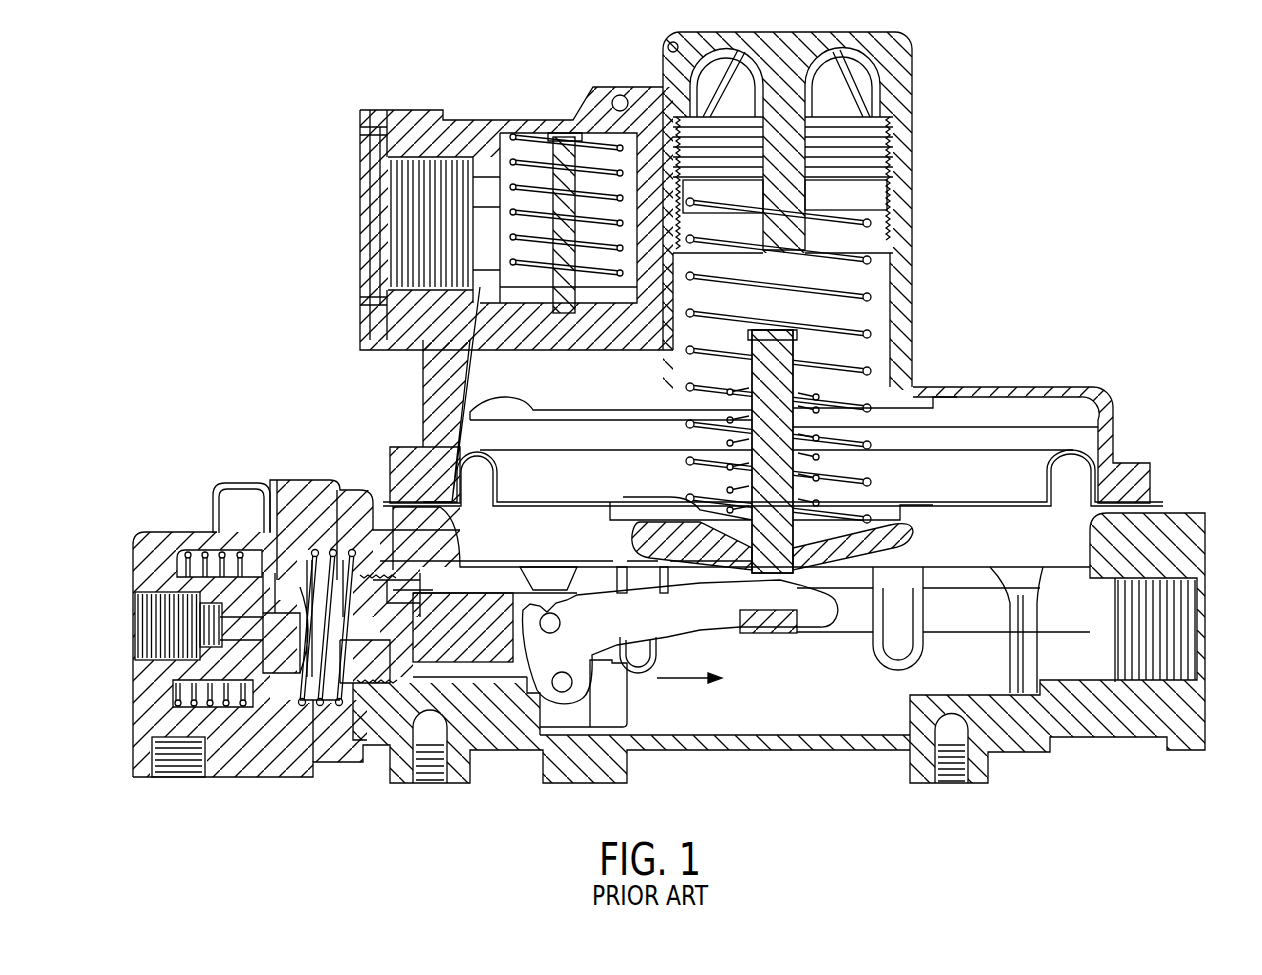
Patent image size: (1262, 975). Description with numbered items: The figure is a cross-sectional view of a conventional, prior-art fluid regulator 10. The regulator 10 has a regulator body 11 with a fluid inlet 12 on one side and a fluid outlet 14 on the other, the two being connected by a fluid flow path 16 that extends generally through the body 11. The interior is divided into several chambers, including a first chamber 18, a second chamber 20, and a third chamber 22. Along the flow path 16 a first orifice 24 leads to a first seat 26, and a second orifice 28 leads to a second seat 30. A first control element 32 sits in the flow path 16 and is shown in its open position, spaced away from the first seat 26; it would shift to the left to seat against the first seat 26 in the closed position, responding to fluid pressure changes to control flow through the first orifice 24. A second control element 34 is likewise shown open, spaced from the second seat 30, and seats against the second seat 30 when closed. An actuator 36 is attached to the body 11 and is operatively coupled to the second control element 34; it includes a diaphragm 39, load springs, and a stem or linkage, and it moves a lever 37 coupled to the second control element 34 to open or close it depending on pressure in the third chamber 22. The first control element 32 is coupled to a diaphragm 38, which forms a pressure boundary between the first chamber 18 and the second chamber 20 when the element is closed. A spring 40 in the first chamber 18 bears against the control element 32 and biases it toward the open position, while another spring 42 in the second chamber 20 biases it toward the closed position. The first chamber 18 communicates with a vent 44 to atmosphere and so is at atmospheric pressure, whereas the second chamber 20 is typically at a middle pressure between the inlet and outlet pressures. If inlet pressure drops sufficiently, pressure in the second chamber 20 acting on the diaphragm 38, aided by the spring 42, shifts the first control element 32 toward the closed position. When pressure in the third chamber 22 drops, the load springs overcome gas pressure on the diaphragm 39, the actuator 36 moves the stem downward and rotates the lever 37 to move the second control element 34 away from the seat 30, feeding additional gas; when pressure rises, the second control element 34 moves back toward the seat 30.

The fluid regulator 10 is at (1008, 214).
The regulator body 11 is at (295, 780).
The fluid inlet 12 is at (135, 628).
The fluid outlet 14 is at (1205, 633).
The fluid flow path 16 is at (695, 690).
The first chamber 18 is at (215, 552).
The second chamber 20 is at (302, 522).
The third chamber 22 is at (800, 722).
The first orifice 24 is at (265, 570).
The first seat 26 is at (290, 625).
The second orifice 28 is at (383, 690).
The second seat 30 is at (425, 700).
The first control element 32 is at (335, 700).
The second control element 34 is at (483, 652).
The actuator 36 is at (888, 442).
The lever 37 is at (727, 600).
The diaphragm 38 is at (263, 548).
The diaphragm 39 is at (1002, 500).
The spring 40 is at (185, 555).
The spring 42 is at (340, 552).
The vent 44 is at (178, 765).